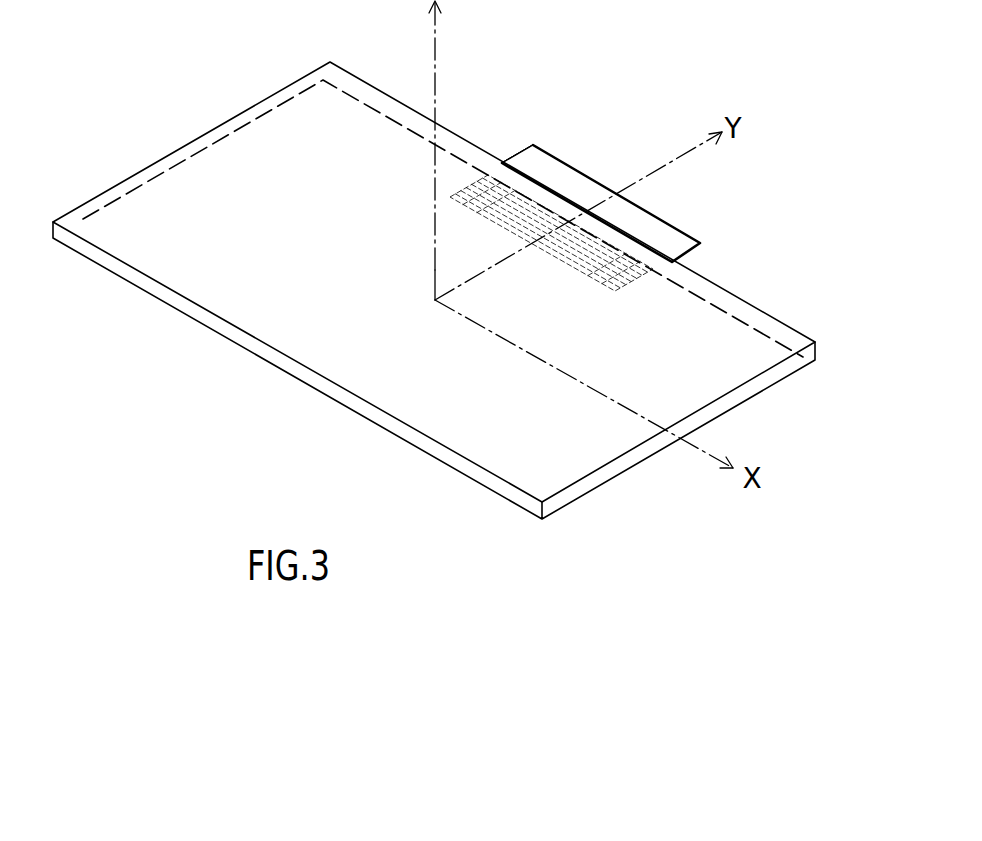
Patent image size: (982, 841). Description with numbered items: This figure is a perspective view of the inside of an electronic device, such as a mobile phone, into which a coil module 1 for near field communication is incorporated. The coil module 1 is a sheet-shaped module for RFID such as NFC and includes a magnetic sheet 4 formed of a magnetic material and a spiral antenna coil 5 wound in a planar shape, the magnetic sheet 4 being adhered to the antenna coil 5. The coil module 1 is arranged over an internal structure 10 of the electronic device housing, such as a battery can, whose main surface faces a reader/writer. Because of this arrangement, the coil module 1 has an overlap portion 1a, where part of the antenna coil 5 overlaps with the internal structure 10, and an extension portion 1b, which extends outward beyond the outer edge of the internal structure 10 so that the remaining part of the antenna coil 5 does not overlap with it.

The coil module 1 is at (533, 145).
The overlap portion 1a is at (646, 186).
The extension portion 1b is at (668, 240).
The magnetic sheet 4 is at (575, 182).
The antenna coil 5 is at (482, 190).
The internal structure 10 is at (532, 457).